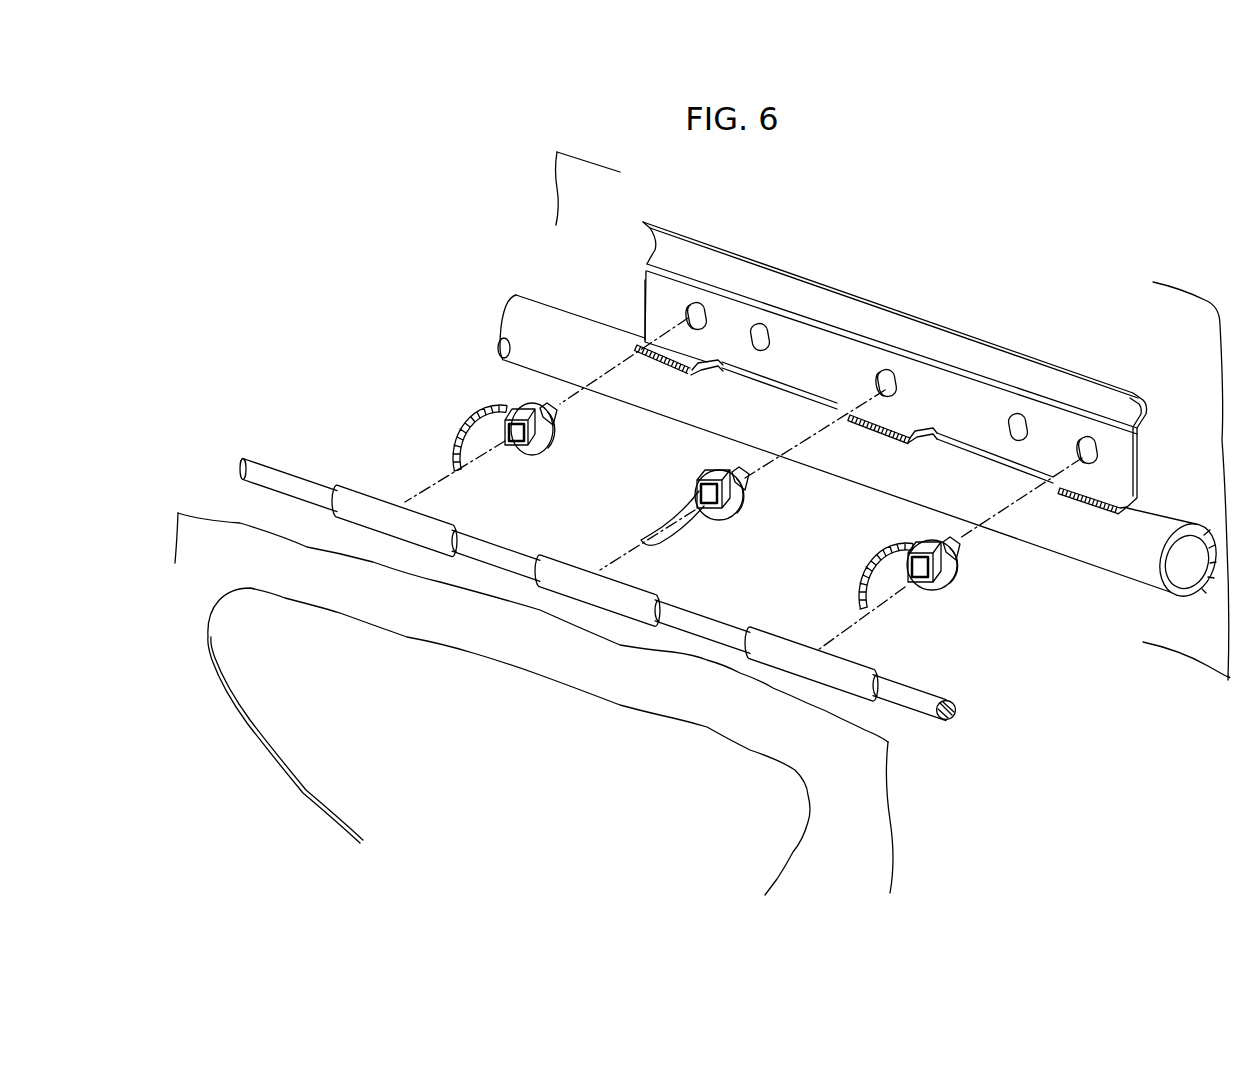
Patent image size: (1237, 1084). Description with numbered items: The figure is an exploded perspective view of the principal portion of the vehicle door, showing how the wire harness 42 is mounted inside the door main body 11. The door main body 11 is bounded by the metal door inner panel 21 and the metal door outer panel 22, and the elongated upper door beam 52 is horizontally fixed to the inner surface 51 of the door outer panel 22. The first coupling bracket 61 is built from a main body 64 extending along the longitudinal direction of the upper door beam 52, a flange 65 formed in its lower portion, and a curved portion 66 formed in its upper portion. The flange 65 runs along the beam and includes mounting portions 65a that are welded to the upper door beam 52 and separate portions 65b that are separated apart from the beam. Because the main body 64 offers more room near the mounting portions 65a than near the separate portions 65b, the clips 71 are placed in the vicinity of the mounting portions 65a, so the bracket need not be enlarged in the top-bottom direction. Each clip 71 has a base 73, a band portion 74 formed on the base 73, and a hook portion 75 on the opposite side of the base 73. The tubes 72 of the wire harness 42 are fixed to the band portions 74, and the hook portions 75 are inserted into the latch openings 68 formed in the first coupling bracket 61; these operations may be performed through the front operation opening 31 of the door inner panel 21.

The door main body 11 is at (432, 256).
The door inner panel 21 is at (893, 823).
The door outer panel 22 is at (556, 195).
The front operation opening 31 is at (305, 788).
The wire harness 42 is at (303, 487).
The inner surface 51 is at (582, 174).
The upper door beam 52 is at (498, 348).
The first coupling bracket 61 is at (866, 297).
The main body 64 is at (643, 298).
The flange 65 is at (636, 341).
The mounting portions 65a is at (657, 354).
The separate portions 65b is at (717, 372).
The curved portion 66 is at (654, 251).
The latch openings 68 is at (696, 304).
The clips 71 is at (539, 455).
The tubes 72 is at (400, 525).
The base 73 is at (510, 438).
The band portion 74 is at (462, 436).
The hook portion 75 is at (556, 413).